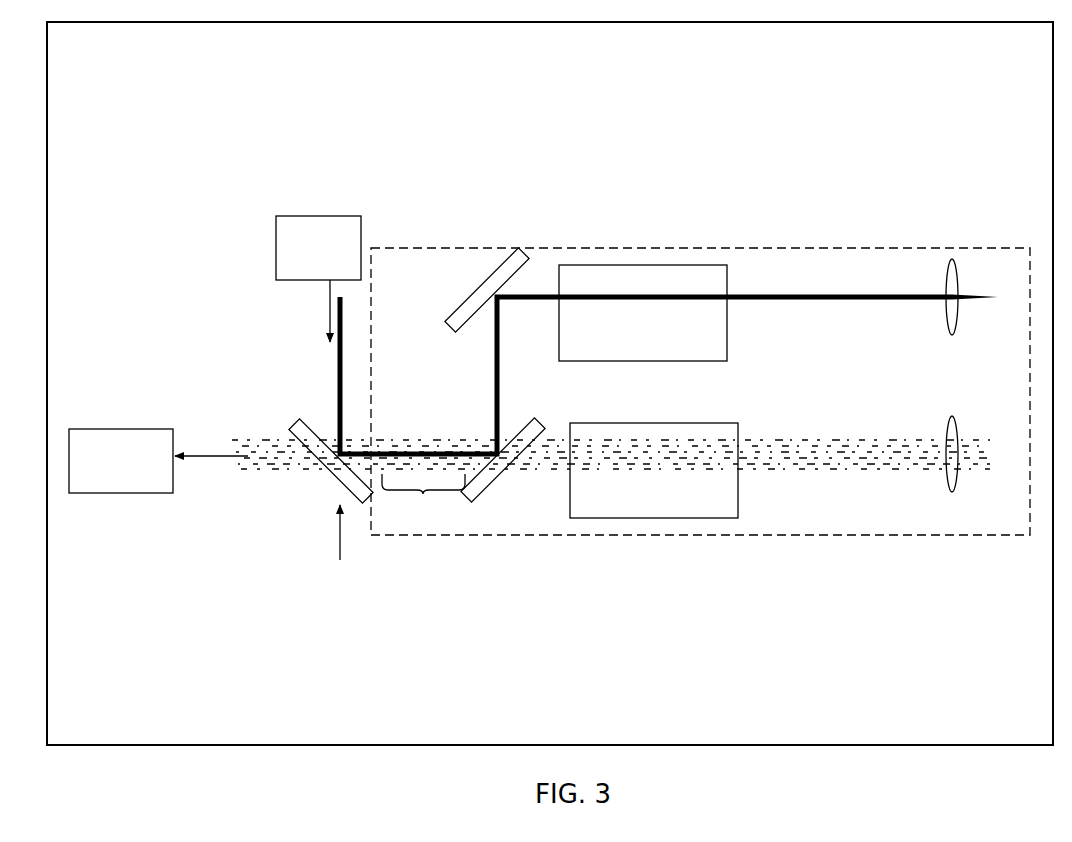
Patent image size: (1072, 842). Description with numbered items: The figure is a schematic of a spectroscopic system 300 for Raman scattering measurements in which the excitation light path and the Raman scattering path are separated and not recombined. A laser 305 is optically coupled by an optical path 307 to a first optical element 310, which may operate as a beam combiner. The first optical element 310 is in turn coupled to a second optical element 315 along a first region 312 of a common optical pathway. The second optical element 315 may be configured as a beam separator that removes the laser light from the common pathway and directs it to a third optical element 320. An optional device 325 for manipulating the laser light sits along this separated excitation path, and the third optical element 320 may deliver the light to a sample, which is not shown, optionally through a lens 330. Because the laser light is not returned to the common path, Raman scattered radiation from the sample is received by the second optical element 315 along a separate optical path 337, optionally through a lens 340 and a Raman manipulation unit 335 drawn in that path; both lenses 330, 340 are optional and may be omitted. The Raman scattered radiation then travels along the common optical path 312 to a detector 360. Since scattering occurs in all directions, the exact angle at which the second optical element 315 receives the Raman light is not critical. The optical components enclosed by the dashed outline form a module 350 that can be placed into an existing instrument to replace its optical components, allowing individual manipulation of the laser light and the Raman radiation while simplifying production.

The system 300 is at (160, 757).
The laser 305 is at (318, 222).
The optical path 307 is at (343, 357).
The first optical element 310 is at (298, 422).
The first region of a common optical pathway 312 is at (423, 502).
The second optical element 315 is at (505, 468).
The third optical element 320 is at (518, 250).
The device for manipulating the laser light 325 is at (672, 265).
The lens 330 is at (950, 270).
The Raman manipulation optics 335 is at (665, 508).
The optical path 337 is at (832, 488).
The lens 340 is at (952, 493).
The module 350 is at (822, 542).
The detector 360 is at (121, 477).